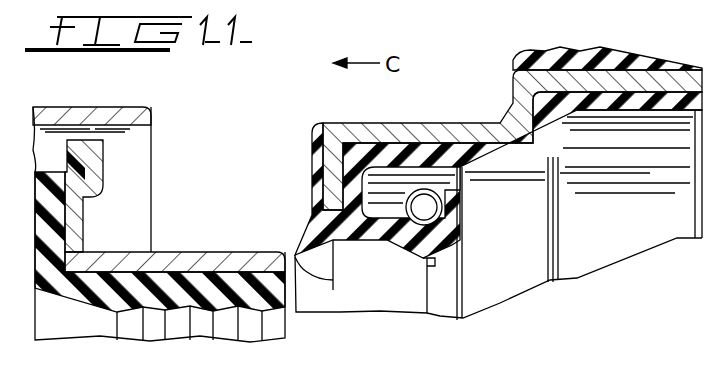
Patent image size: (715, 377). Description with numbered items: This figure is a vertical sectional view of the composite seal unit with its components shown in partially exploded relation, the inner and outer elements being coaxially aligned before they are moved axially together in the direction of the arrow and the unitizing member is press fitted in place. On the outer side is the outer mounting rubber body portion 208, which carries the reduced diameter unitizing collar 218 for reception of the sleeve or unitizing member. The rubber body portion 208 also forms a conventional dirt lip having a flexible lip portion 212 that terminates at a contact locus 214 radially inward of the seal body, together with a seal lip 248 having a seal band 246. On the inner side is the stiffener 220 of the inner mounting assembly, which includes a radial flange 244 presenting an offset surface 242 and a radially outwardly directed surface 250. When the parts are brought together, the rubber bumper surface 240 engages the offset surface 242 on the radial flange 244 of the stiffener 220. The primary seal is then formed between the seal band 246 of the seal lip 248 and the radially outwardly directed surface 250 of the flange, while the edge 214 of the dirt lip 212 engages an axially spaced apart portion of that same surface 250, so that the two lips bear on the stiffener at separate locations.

The outer mounting rubber body portion 208 is at (553, 135).
The flexible lip portion 212 is at (312, 233).
The contact locus 214 is at (332, 280).
The unitizing collar 218 is at (445, 137).
The stiffener 220 is at (167, 265).
The rubber bumper surface 240 is at (312, 160).
The offset surface 242 is at (103, 182).
The radial flange 244 is at (70, 223).
The seal band 246 is at (427, 267).
The seal lip 248 is at (455, 225).
The radially outwardly directed surface 250 is at (257, 228).